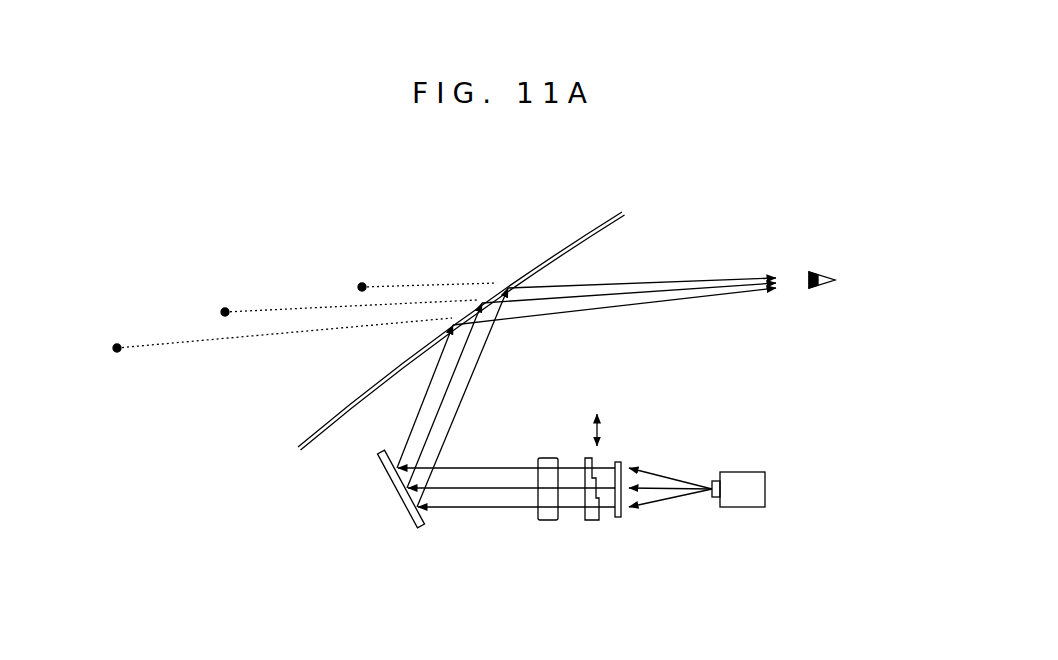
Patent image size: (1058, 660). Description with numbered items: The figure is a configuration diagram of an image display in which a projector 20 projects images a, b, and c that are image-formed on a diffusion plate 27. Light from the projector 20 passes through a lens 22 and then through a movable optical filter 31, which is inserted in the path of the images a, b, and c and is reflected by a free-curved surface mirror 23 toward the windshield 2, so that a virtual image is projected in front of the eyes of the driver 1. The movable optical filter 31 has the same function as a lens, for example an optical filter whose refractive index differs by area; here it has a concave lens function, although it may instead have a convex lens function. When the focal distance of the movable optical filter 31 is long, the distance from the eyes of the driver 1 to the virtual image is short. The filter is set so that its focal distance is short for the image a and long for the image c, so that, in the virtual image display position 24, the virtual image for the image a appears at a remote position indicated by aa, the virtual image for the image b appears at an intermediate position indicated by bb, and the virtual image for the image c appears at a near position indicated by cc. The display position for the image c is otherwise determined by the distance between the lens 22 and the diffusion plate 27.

The driver 1 is at (860, 273).
The windshield 2 is at (601, 227).
The projector 20 is at (765, 505).
The lens 22 is at (552, 524).
The free-curved surface mirror 23 is at (394, 522).
The virtual image display position 24 is at (284, 312).
The diffusion plate 27 is at (622, 522).
The movable optical filter 31 is at (595, 522).
The image a is at (640, 471).
The image b is at (660, 488).
The image c is at (680, 495).
The display position for the virtual image with respect to image a aa is at (274, 350).
The display position for the virtual image with respect to image b bb is at (330, 316).
The display position for the virtual image with respect to image c cc is at (410, 285).